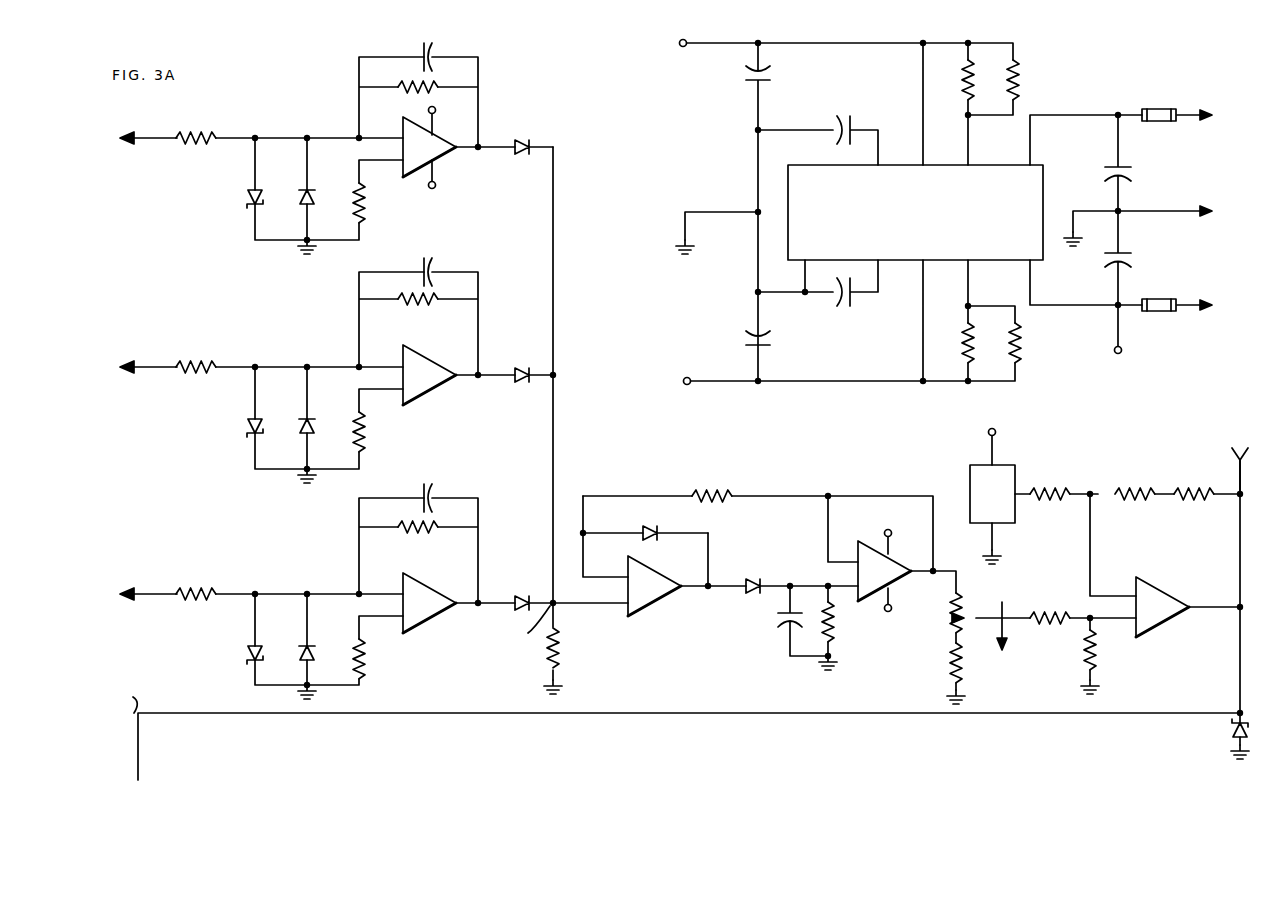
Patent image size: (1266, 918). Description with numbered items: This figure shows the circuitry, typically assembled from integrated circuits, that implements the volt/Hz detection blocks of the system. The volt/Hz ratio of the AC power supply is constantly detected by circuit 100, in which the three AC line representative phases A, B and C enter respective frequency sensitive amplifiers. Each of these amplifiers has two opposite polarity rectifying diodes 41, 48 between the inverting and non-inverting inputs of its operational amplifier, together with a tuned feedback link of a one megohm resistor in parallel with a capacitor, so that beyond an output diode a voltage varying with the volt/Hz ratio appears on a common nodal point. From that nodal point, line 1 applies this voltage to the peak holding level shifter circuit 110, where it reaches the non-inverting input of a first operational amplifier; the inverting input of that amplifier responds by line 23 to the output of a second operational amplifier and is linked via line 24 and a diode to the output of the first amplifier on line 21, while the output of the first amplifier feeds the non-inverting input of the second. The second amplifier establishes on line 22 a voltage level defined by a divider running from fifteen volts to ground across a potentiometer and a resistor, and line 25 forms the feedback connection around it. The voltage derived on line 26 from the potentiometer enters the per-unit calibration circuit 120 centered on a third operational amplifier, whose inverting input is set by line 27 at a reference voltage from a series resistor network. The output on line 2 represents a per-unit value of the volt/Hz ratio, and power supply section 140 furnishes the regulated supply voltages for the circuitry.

The line 1 is at (612, 604).
The line 2 is at (622, 713).
The line 21 is at (708, 590).
The line 22 is at (956, 578).
The line 23 is at (748, 496).
The line 24 is at (690, 533).
The feedback line to buffer amplifier 25 is at (828, 540).
The line 26 is at (1027, 616).
The line 27 is at (1090, 535).
The rectifying diode 41 is at (247, 194).
The rectifying diode 48 is at (312, 196).
The circuit 100 is at (462, 705).
The peak holding level shifter circuit 110 is at (747, 680).
The per-unit calibration circuit 120 is at (1038, 582).
The power supply section 140 is at (1082, 397).